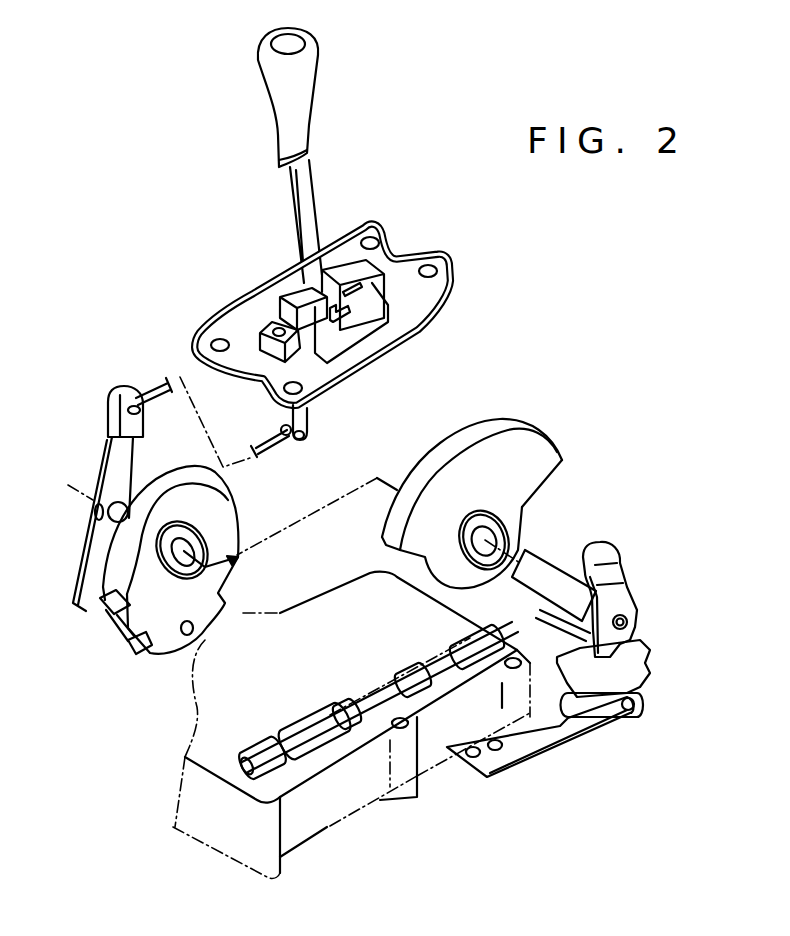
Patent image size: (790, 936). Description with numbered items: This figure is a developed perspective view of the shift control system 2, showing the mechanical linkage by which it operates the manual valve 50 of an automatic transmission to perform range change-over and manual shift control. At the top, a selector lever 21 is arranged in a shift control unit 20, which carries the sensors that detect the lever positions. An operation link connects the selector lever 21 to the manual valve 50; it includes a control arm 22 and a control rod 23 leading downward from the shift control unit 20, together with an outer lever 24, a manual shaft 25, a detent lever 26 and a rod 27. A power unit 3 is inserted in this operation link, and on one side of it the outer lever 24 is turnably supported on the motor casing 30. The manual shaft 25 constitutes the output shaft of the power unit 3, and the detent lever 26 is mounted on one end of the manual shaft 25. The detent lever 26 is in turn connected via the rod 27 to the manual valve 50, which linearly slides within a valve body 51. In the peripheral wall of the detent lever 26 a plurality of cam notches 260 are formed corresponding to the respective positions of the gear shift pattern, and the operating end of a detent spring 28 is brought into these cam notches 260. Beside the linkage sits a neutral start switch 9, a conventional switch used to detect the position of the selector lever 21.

The shift control system 2 is at (404, 442).
The power unit 3 is at (118, 650).
The neutral start switch 9 is at (508, 430).
The shift control unit 20 is at (320, 240).
The selector lever 21 is at (312, 114).
The control arm 22 is at (307, 420).
The control rod 23 is at (277, 445).
The outer lever 24 is at (107, 467).
The manual shaft 25 is at (552, 572).
The detent lever 26 is at (640, 608).
The rod 27 is at (629, 632).
The detent spring 28 is at (528, 760).
The motor casing 30 is at (223, 516).
The manual valve 50 is at (353, 733).
The valve body 51 is at (327, 817).
The cam notches 260 is at (642, 665).